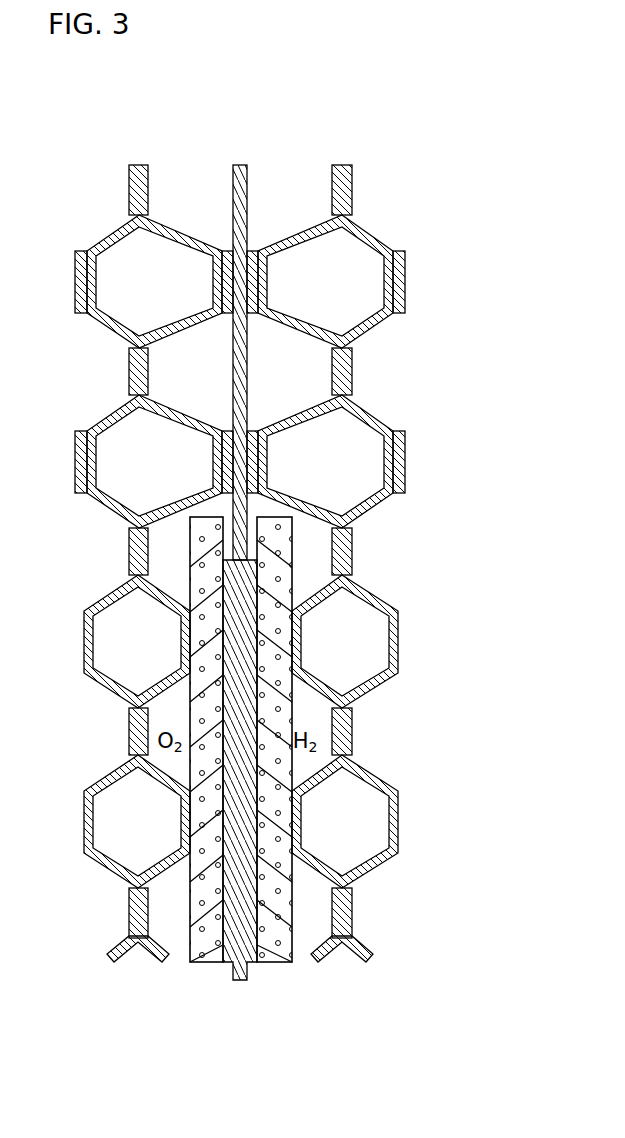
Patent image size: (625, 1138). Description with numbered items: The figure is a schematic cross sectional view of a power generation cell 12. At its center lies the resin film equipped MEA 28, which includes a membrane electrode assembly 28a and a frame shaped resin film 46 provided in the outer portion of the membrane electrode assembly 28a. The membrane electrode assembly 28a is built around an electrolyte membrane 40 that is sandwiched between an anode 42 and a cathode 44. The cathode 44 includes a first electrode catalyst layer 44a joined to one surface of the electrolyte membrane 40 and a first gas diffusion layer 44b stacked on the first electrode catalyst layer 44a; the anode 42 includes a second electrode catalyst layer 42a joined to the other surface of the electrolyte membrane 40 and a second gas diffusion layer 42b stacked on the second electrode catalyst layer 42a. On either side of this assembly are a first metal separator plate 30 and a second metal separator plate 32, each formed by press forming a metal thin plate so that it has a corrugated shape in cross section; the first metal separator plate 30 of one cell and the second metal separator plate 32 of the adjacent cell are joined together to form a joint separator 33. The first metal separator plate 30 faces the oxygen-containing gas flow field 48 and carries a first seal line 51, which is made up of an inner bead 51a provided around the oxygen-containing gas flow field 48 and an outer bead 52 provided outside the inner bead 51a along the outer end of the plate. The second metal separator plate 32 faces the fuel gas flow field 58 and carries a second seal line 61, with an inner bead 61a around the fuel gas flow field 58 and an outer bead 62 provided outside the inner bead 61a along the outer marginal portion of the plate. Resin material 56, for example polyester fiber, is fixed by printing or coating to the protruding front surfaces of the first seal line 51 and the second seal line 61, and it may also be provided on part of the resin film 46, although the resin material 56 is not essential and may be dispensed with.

The power generation cell 12 is at (457, 782).
The resin film equipped MEA 28 is at (320, 794).
The membrane electrode assembly 28a is at (185, 1032).
The first metal separator plate 30 is at (172, 222).
The second metal separator plate 32 is at (116, 222).
The joint separator 33 is at (195, 126).
The electrolyte membrane 40 is at (246, 992).
The anode 42 is at (278, 977).
The second electrode catalyst layer 42a is at (255, 585).
The second gas diffusion layer 42b is at (296, 641).
The cathode 44 is at (210, 978).
The first electrode catalyst layer 44a is at (233, 633).
The first gas diffusion layer 44b is at (200, 617).
The resin film 46 is at (238, 164).
The oxygen-containing gas flow field 48 is at (157, 718).
The first seal line 51 is at (191, 219).
The inner bead 51a is at (205, 432).
The outer bead 52 is at (194, 247).
The resin material 56 is at (82, 284).
The fuel gas flow field 58 is at (345, 742).
The second seal line 61 is at (298, 216).
The inner bead 61a is at (280, 430).
The outer bead 62 is at (277, 243).